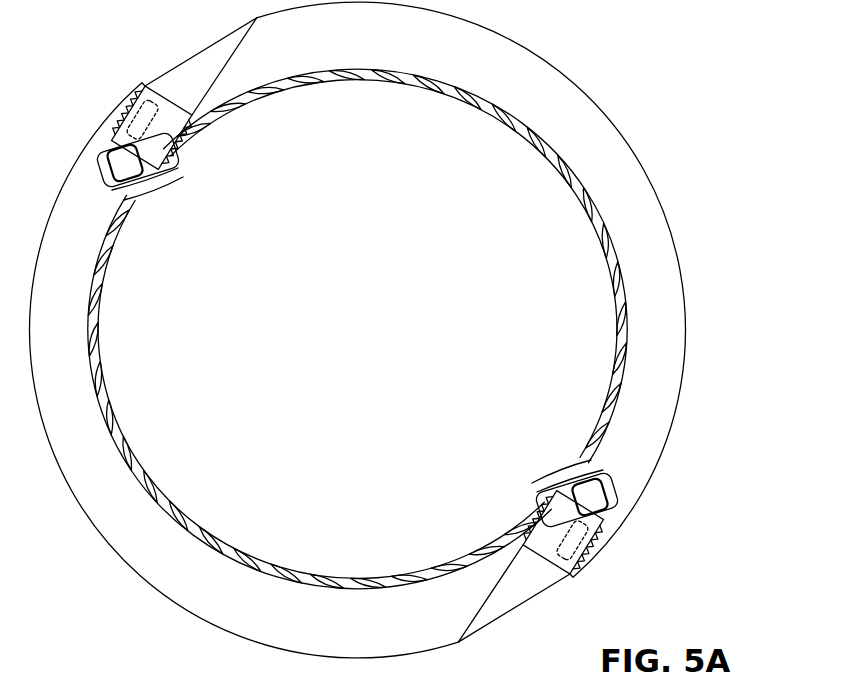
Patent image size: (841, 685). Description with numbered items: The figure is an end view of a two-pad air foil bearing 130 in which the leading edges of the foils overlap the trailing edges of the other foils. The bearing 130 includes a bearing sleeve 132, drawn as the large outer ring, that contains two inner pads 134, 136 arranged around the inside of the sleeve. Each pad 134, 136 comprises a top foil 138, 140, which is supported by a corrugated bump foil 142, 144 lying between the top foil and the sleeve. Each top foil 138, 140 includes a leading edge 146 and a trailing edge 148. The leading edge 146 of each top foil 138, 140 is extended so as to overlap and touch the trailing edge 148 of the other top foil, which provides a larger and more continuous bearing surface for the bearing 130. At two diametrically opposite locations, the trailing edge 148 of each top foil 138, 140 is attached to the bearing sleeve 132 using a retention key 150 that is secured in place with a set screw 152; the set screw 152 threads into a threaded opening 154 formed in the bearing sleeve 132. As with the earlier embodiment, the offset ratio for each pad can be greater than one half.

The two-pad air foil bearing 130 is at (370, 330).
The bearing sleeve 132 is at (662, 247).
The inner pad 134 is at (486, 146).
The inner pad 136 is at (192, 492).
The top foil 138 is at (577, 199).
The top foil 140 is at (260, 555).
The bump foil 142 is at (565, 173).
The bump foil 144 is at (193, 533).
The leading edge 146 is at (150, 227).
The trailing edge 148 is at (170, 192).
The retention key 150 is at (123, 167).
The set screw 152 is at (122, 133).
The threaded opening 154 is at (164, 86).